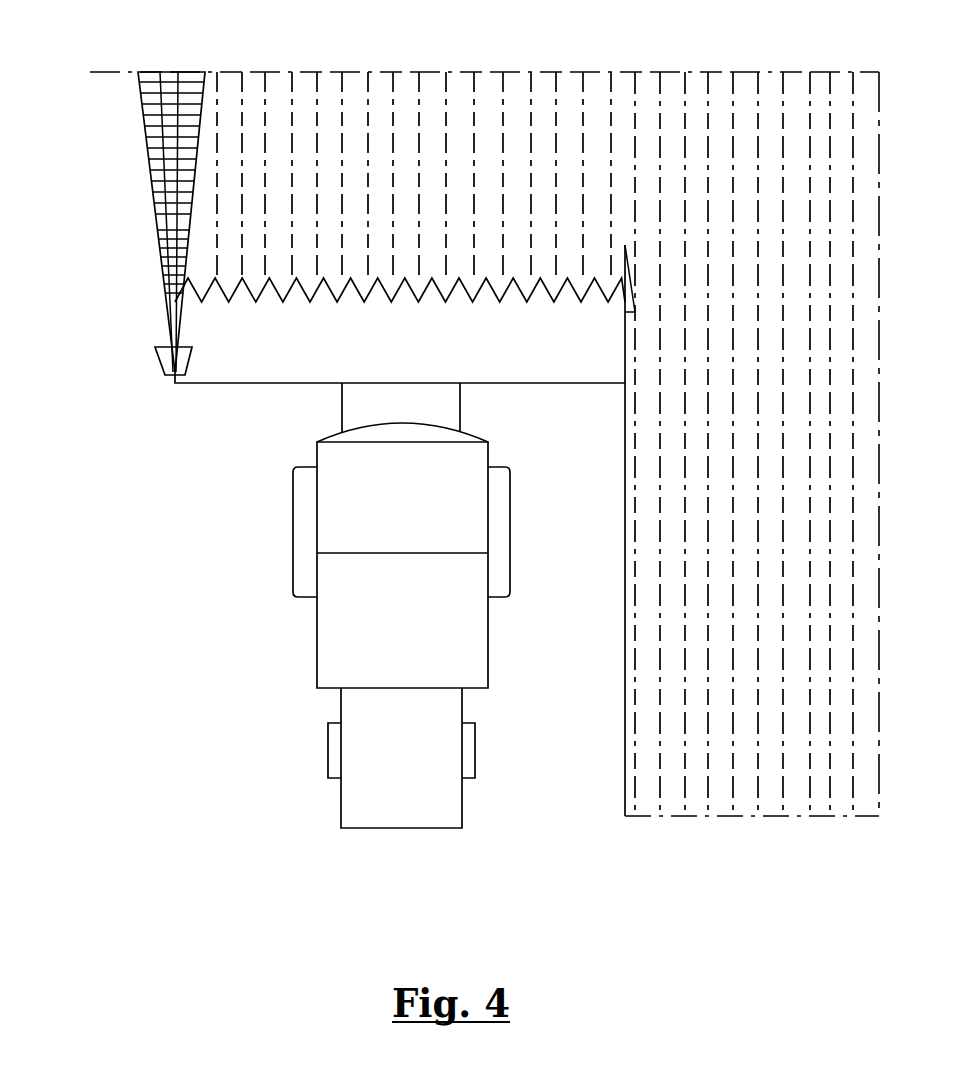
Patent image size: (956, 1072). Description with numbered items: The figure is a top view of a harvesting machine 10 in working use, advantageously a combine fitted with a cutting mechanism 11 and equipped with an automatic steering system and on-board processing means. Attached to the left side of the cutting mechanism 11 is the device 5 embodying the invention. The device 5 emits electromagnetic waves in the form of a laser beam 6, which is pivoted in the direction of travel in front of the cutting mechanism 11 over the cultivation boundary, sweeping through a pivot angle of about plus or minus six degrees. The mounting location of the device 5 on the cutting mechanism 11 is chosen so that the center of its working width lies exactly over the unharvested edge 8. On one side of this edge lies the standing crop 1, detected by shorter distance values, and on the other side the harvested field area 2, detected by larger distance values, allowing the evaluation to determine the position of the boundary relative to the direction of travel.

The standing crop 1 is at (302, 117).
The harvested field area 2 is at (112, 143).
The device 5 is at (165, 352).
The laser beam 6 is at (156, 85).
The unharvested edge 8 is at (180, 85).
The harvesting machine 10 is at (340, 595).
The cutting mechanism 11 is at (221, 373).